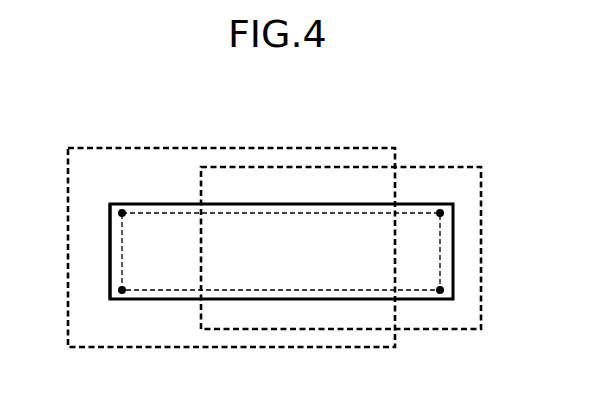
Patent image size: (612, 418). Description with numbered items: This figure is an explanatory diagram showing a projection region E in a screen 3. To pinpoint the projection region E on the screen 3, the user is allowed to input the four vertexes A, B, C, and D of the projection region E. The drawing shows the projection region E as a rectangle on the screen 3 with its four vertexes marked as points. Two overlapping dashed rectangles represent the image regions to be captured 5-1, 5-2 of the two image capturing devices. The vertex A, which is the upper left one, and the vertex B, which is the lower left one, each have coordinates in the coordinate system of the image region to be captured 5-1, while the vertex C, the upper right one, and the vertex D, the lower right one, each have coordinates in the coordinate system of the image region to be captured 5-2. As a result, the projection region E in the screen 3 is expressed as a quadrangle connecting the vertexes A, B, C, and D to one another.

The screen 3 is at (453, 245).
The image region to be captured 5-1 is at (200, 348).
The image region to be captured 5-2 is at (430, 330).
The vertex A is at (122, 209).
The vertex B is at (122, 294).
The vertex C is at (440, 209).
The vertex D is at (444, 290).
The projection region E is at (115, 264).